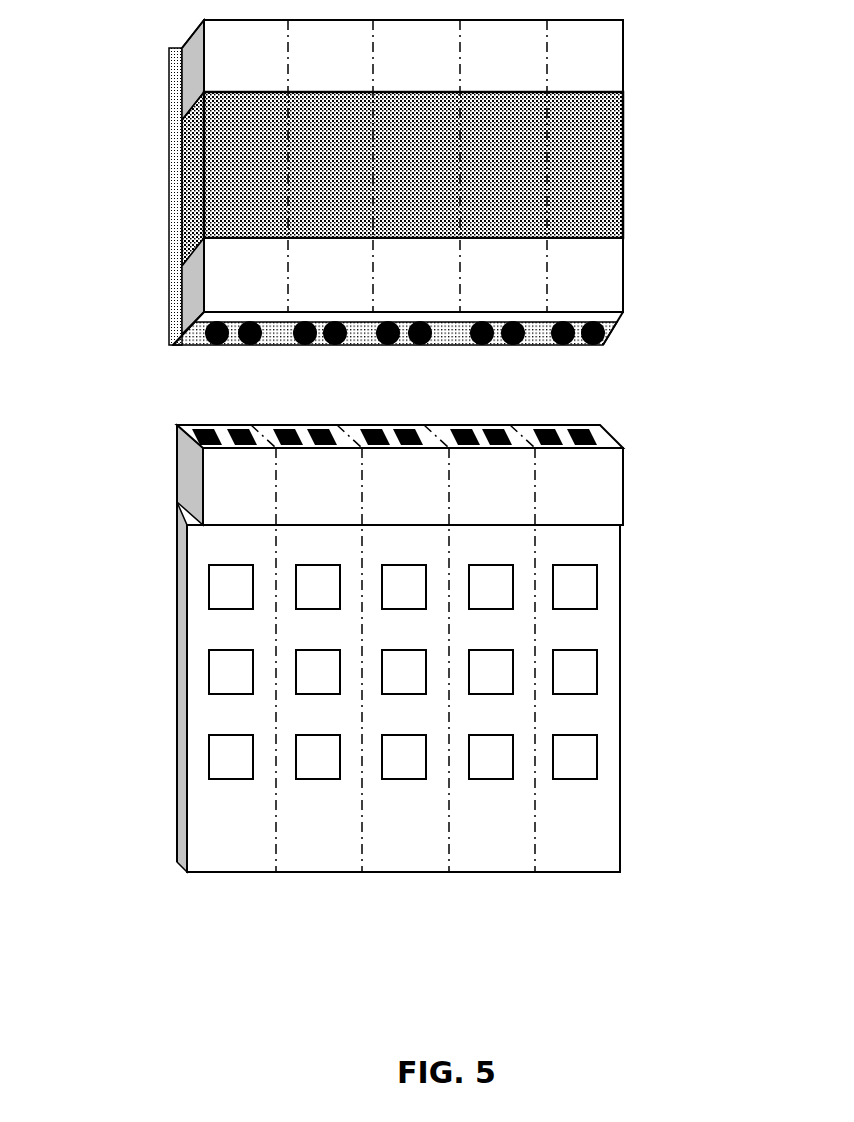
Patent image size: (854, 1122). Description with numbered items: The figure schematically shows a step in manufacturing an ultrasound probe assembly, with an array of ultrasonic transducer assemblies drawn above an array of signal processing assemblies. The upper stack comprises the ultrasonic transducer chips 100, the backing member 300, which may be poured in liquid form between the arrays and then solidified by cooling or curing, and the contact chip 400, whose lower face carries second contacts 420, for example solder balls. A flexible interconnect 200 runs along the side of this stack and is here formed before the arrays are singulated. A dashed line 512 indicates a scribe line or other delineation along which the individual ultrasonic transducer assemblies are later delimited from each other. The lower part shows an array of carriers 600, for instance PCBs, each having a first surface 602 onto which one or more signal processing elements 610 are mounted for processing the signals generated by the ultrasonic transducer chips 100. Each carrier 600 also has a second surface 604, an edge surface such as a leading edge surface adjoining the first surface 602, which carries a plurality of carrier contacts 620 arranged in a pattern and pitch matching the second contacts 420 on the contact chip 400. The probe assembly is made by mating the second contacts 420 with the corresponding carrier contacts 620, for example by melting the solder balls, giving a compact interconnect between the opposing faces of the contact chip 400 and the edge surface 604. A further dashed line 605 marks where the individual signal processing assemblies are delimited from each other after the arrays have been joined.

The ultrasonic transducer chip 100 is at (610, 65).
The flexible interconnect 200 is at (177, 307).
The backing member 300 is at (607, 177).
The contact chip 400 is at (618, 272).
The second contacts 420 is at (607, 338).
The dashed line 512 is at (288, 35).
The carrier 600 is at (407, 706).
The first surface 602 is at (612, 850).
The second surface 604 is at (600, 433).
The dashed line 605 is at (276, 855).
The signal processing element 610 is at (588, 757).
The carrier contacts 620 is at (178, 452).